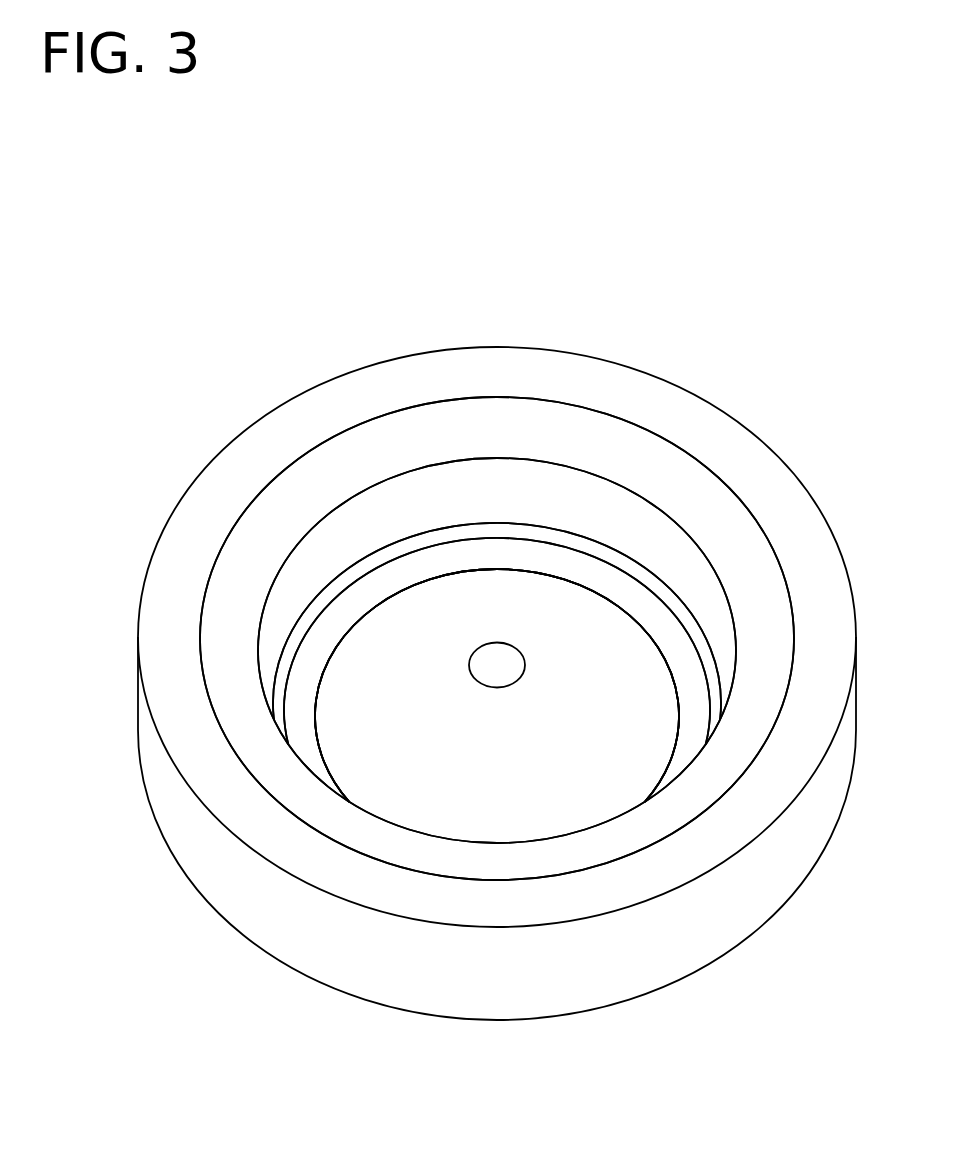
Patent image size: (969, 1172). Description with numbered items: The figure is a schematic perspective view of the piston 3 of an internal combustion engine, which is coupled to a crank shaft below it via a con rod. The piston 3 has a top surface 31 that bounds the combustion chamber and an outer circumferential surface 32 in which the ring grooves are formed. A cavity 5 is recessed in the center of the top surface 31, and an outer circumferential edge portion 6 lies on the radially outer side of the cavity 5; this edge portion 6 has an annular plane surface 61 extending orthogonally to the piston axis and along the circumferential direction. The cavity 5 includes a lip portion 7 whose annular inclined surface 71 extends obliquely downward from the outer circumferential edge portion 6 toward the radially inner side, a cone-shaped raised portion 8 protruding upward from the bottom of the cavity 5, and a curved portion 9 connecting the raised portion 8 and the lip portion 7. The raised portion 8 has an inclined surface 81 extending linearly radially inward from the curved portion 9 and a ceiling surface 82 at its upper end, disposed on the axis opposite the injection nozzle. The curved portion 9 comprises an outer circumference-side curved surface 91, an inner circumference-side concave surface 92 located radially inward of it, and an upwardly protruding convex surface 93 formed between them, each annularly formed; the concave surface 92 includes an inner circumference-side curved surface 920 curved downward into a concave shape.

The piston 3 is at (293, 260).
The top surface 31 is at (498, 903).
The outer circumferential surface 32 is at (585, 972).
The cavity 5 is at (354, 527).
The outer circumferential edge portion 6 is at (497, 638).
The plane surface 61 is at (375, 388).
The lip portion 7 is at (497, 650).
The inclined surface 71 is at (453, 430).
The raised portion 8 is at (510, 600).
The inclined surface 81 is at (497, 685).
The ceiling surface 82 is at (487, 680).
The curved portion 9 is at (792, 290).
The outer circumference-side curved surface 91 is at (657, 540).
The inner circumference-side concave surface 92 is at (572, 565).
The inner circumference-side curved surface 920 is at (497, 685).
The convex surface 93 is at (613, 555).